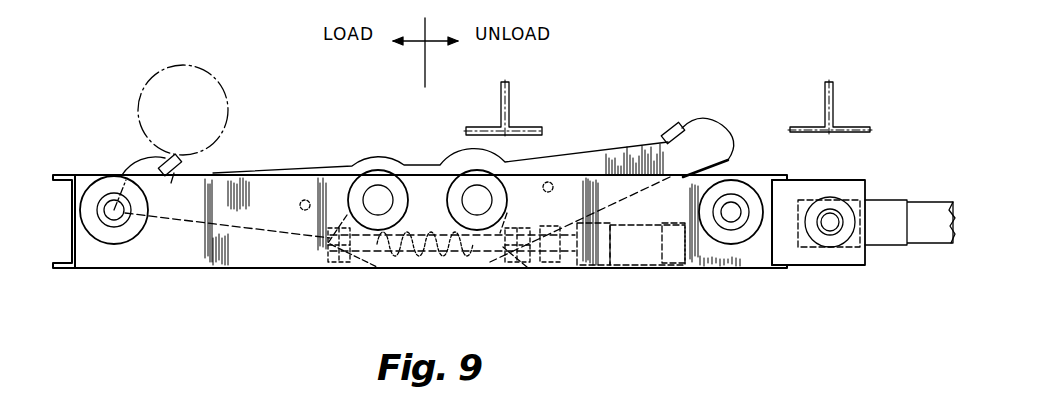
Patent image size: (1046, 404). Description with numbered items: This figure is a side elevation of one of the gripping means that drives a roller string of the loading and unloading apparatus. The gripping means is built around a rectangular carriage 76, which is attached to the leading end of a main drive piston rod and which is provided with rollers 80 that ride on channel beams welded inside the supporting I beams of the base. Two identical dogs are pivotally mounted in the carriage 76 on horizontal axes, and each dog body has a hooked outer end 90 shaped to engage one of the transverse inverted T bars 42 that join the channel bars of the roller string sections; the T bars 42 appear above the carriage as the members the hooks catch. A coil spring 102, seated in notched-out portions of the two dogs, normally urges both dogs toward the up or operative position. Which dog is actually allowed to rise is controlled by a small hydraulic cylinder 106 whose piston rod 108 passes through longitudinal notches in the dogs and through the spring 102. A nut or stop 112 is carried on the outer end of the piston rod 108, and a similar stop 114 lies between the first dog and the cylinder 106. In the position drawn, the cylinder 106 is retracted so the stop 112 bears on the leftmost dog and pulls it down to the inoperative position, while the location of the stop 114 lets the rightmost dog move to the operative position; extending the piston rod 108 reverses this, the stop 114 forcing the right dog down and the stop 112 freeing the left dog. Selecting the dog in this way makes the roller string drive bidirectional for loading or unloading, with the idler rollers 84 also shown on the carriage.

The transverse inverted T bar 42 is at (510, 100).
The carriage 76 is at (257, 246).
The roller 80 is at (132, 228).
The roller 84 is at (378, 192).
The hooked outer end 90 is at (122, 172).
The coil spring 102 is at (420, 262).
The hydraulic cylinder 106 is at (642, 258).
The piston rod 108 is at (568, 260).
The stop 112 is at (333, 258).
The stop 114 is at (526, 262).